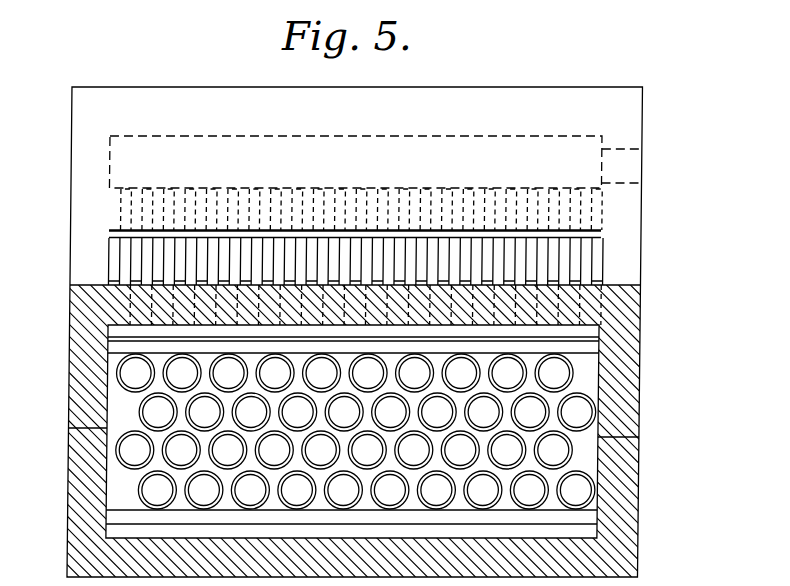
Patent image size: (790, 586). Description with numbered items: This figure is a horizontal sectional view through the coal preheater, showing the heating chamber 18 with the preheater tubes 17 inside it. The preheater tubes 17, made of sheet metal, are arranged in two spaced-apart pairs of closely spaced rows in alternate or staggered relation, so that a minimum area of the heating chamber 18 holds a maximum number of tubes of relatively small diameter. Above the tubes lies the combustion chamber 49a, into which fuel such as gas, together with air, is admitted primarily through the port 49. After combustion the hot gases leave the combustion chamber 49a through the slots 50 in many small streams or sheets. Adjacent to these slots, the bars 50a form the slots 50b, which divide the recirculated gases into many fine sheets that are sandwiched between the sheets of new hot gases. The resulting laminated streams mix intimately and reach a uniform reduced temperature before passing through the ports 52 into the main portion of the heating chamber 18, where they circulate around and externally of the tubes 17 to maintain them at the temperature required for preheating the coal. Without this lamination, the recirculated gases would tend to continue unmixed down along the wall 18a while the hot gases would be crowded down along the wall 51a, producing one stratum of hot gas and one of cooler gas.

The preheater tubes 17 is at (140, 484).
The heating chamber 18 is at (80, 386).
The wall 18a is at (115, 302).
The port 49 is at (623, 169).
The combustion chamber 49a is at (355, 162).
The slots 50 is at (125, 208).
The bars 50a is at (128, 262).
The slots 50b is at (115, 240).
The wall 51a is at (115, 226).
The ports 52 is at (130, 317).